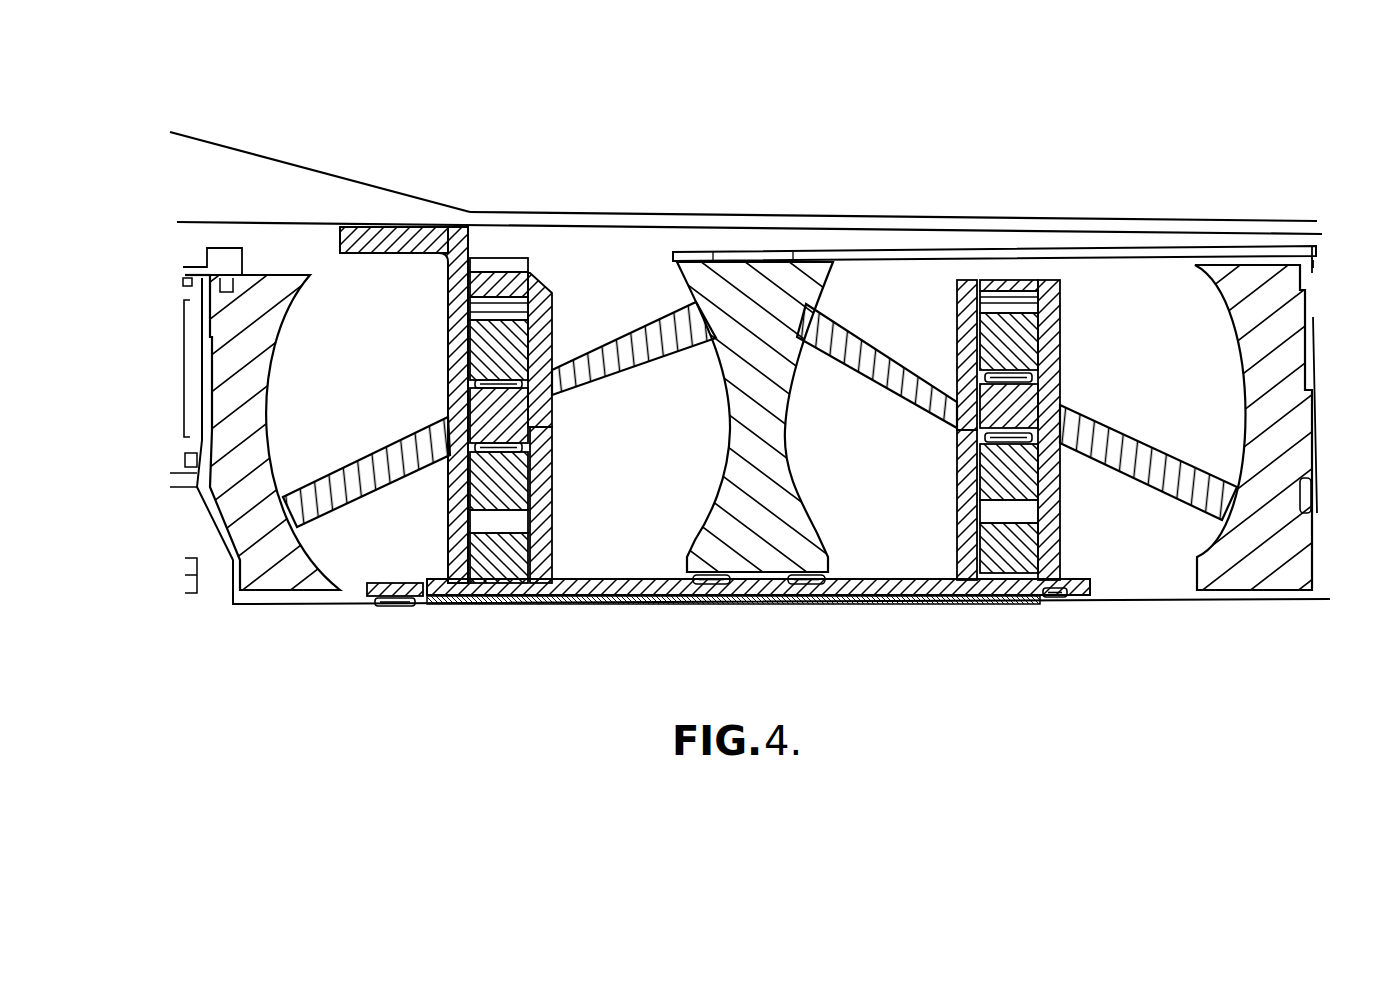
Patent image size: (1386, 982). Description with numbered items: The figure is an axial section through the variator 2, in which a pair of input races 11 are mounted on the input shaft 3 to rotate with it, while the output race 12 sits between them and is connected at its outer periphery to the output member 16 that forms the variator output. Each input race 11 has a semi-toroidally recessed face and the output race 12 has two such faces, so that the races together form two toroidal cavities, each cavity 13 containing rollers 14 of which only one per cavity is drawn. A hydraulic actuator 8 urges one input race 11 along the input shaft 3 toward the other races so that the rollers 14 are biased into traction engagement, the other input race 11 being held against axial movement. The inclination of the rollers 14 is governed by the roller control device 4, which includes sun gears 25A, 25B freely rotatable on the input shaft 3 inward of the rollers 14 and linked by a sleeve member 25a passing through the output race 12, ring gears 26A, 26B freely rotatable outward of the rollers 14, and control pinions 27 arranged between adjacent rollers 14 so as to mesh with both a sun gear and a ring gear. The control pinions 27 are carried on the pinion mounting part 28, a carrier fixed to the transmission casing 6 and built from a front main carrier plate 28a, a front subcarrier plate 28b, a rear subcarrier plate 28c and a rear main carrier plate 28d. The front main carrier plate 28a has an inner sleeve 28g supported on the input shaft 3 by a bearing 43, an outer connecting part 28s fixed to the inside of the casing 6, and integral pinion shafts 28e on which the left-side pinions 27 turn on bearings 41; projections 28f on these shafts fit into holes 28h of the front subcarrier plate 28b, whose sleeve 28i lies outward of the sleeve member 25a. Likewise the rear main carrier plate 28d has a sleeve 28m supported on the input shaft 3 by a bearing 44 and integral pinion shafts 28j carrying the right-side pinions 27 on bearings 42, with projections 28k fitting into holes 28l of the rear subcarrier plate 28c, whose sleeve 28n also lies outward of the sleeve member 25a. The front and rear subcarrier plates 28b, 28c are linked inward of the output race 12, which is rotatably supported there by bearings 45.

The variator 2 is at (373, 215).
The input shaft 3 is at (1177, 592).
The roller control device 4 is at (578, 255).
The transmission casing 6 is at (182, 135).
The hydraulic actuator 8 is at (190, 492).
The input race 11 is at (267, 283).
The output race 12 is at (720, 283).
The cavity 13 is at (578, 545).
The roller 14 is at (343, 468).
The output member 16 is at (812, 253).
The sun gear 25A is at (507, 560).
The sun gear 25B is at (1020, 557).
The sleeve member 25a is at (713, 588).
The ring gear 26A is at (503, 280).
The ring gear 26B is at (1017, 287).
The control pinion 27 is at (452, 515).
The pinion mounting part 28 is at (437, 280).
The front main carrier plate 28a is at (473, 507).
The front subcarrier plate 28b is at (553, 480).
The rear subcarrier plate 28c is at (985, 495).
The rear main carrier plate 28d is at (1050, 467).
The pinion shaft 28e is at (478, 413).
The projection 28f is at (555, 410).
The sleeve 28g is at (455, 593).
The hole 28h is at (557, 420).
The sleeve 28i is at (653, 590).
The pinion shaft 28j is at (1035, 405).
The projection 28k is at (958, 405).
The hole 28l is at (958, 418).
The sleeve 28m is at (1105, 582).
The sleeve 28n is at (940, 583).
The connecting part 28s is at (337, 240).
The bearing 41 is at (512, 440).
The bearing 42 is at (1003, 437).
The bearing 43 is at (382, 606).
The bearing 44 is at (1078, 598).
The bearing 45 is at (792, 590).